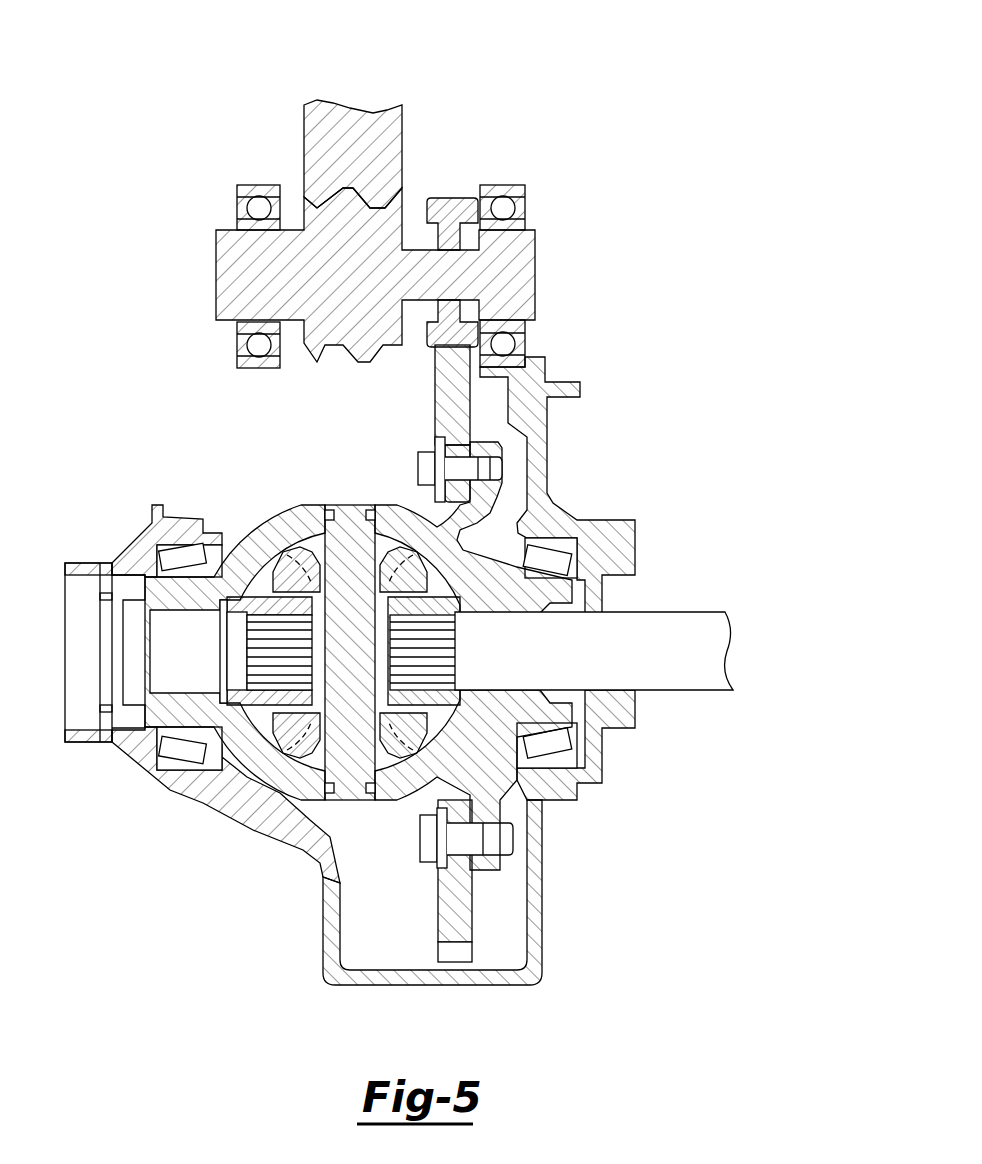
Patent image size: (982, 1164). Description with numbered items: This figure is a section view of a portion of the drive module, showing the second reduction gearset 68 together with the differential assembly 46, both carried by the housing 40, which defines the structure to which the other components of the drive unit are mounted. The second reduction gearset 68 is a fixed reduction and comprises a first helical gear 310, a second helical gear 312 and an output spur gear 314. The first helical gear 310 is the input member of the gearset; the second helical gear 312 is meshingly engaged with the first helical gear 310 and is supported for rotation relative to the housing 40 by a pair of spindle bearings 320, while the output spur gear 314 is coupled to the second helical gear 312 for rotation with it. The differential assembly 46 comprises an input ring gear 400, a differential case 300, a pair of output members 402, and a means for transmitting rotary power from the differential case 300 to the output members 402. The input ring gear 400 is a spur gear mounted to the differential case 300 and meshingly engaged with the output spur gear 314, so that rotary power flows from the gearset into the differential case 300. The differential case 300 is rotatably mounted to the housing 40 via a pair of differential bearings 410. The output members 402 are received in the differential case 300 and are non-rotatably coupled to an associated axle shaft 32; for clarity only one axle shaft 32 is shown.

The axle shaft 32 is at (698, 648).
The housing 40 is at (490, 671).
The differential assembly 46 is at (273, 797).
The second reduction gearset 68 is at (360, 203).
The differential case 300 is at (389, 656).
The first helical gear 310 is at (328, 115).
The second helical gear 312 is at (347, 243).
The output spur gear 314 is at (450, 213).
The spindle bearings 320 is at (230, 344).
The input ring gear 400 is at (460, 912).
The output members 402 is at (280, 642).
The differential bearings 410 is at (557, 547).